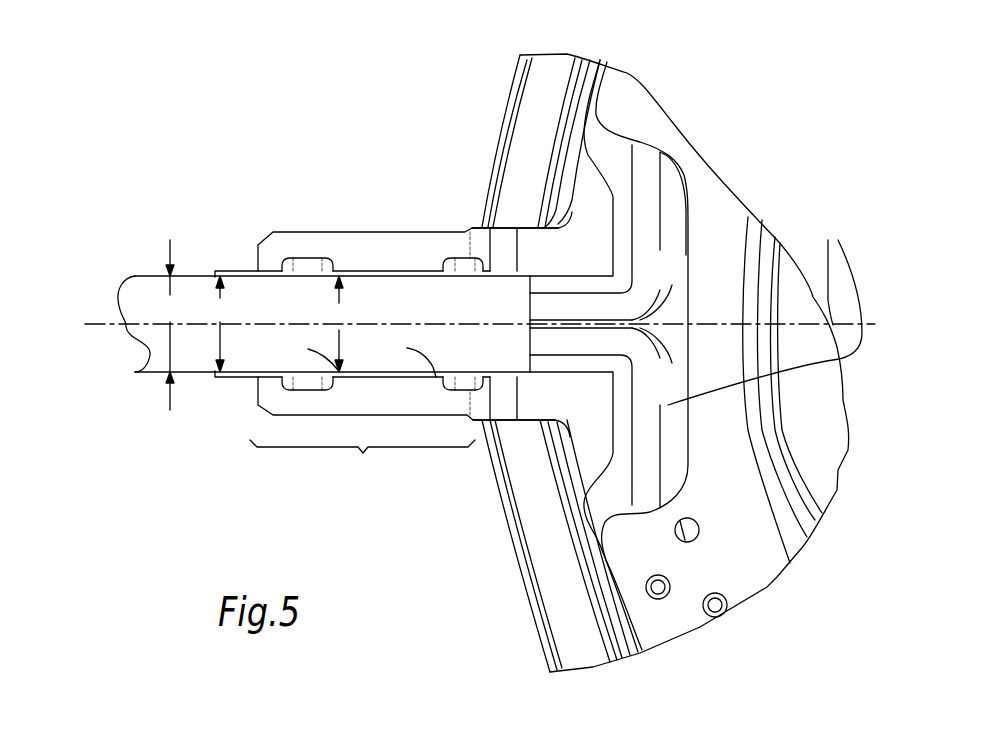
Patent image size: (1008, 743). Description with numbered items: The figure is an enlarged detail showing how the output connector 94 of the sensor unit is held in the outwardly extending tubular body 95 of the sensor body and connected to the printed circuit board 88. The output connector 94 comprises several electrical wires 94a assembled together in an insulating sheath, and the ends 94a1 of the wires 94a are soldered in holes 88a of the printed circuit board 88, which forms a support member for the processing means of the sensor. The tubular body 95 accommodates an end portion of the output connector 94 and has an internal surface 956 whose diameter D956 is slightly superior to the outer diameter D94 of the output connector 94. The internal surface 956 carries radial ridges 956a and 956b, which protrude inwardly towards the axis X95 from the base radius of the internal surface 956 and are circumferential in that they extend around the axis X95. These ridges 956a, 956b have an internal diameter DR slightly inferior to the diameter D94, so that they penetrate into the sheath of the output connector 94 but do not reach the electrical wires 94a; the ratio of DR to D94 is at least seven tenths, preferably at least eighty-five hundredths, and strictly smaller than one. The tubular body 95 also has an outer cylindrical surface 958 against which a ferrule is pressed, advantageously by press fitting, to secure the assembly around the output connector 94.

The printed circuit board 88 is at (667, 363).
The holes of printed circuit board 88a is at (687, 530).
The output connector 94 is at (324, 324).
The electrical wires 94a is at (563, 310).
The ends of wires 94a1 is at (647, 382).
The tubular body 95 is at (362, 461).
The internal surface 956 is at (403, 279).
The radial ridge 956a is at (402, 357).
The radial ridge 956b is at (303, 354).
The outer cylindrical surface 958 is at (390, 231).
The outer diameter of output connector D94 is at (170, 325).
The diameter of internal surface D956 is at (223, 324).
The internal diameter of radial ridges DR is at (341, 324).
The axis X95 is at (460, 324).